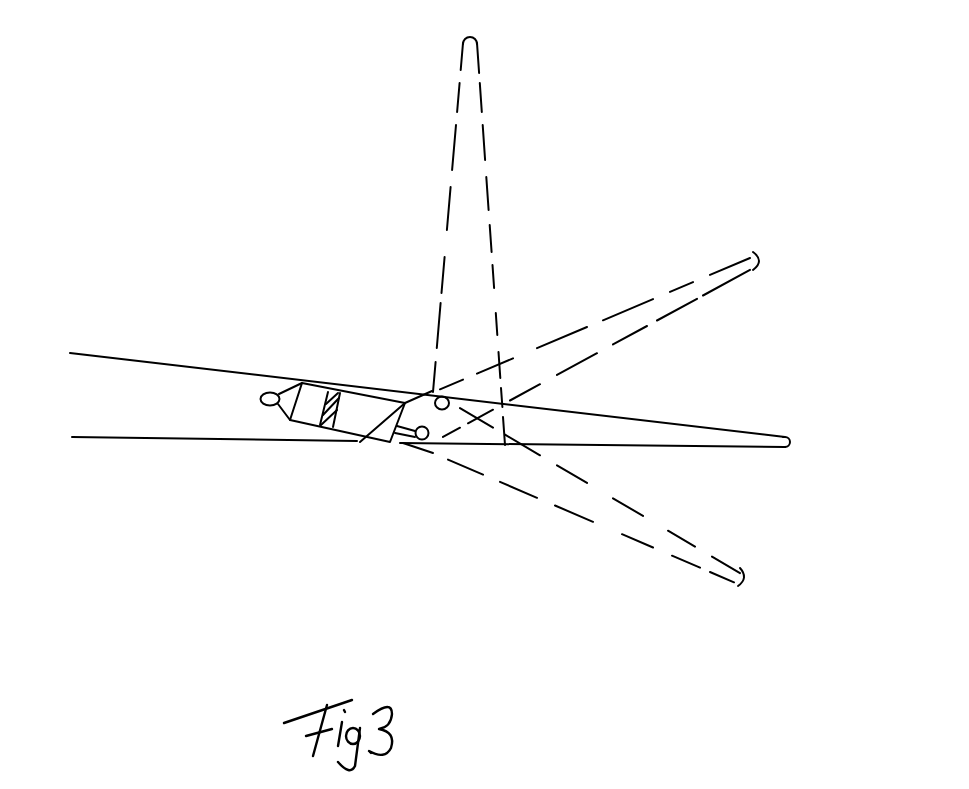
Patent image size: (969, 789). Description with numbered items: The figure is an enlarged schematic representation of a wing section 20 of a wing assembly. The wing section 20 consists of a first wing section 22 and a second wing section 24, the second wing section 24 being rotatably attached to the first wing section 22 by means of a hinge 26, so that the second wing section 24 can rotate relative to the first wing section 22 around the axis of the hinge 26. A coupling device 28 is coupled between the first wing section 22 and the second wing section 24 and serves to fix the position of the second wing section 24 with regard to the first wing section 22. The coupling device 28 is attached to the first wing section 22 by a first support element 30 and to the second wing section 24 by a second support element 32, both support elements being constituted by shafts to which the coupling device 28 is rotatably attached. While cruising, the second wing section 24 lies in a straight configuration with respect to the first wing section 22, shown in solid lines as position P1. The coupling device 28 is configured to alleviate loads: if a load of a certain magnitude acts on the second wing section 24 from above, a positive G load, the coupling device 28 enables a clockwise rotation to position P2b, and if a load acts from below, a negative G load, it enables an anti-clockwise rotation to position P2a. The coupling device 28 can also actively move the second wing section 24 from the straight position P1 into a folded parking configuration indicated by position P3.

The wing section 20 is at (418, 394).
The first wing section 22 is at (426, 483).
The second wing section 24 is at (433, 400).
The hinge 26 is at (385, 337).
The coupling device 28 is at (361, 400).
The first support element 30 is at (259, 328).
The second support element 32 is at (455, 489).
The position P1 is at (820, 439).
The position P2a is at (650, 328).
The position P2b is at (645, 507).
The position P3 is at (486, 226).